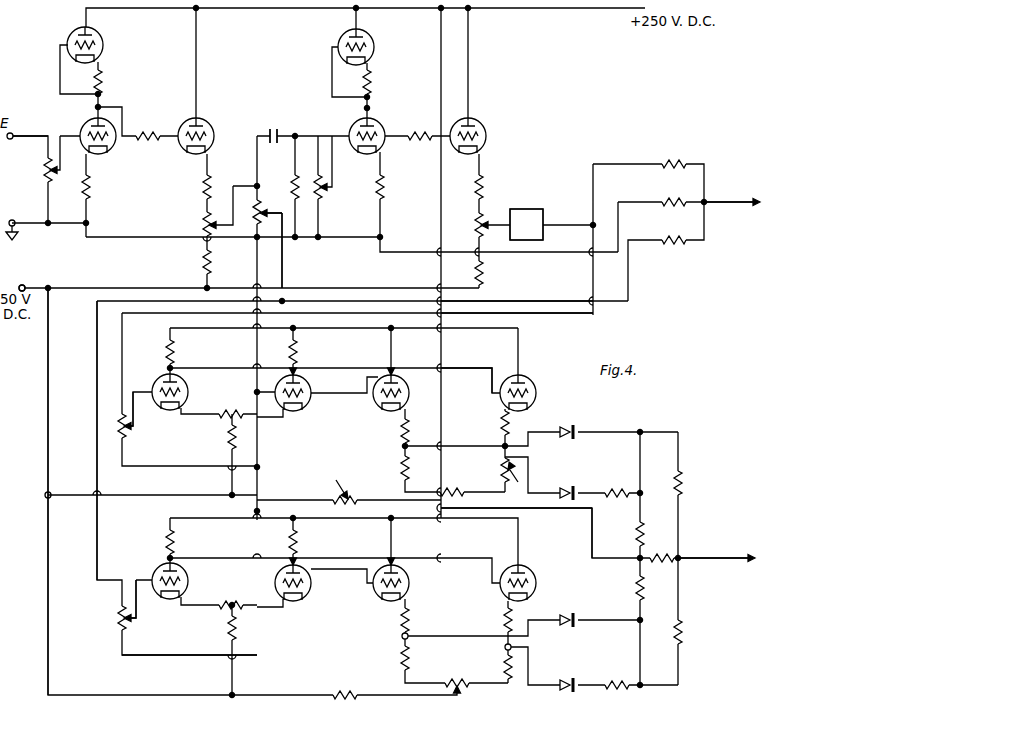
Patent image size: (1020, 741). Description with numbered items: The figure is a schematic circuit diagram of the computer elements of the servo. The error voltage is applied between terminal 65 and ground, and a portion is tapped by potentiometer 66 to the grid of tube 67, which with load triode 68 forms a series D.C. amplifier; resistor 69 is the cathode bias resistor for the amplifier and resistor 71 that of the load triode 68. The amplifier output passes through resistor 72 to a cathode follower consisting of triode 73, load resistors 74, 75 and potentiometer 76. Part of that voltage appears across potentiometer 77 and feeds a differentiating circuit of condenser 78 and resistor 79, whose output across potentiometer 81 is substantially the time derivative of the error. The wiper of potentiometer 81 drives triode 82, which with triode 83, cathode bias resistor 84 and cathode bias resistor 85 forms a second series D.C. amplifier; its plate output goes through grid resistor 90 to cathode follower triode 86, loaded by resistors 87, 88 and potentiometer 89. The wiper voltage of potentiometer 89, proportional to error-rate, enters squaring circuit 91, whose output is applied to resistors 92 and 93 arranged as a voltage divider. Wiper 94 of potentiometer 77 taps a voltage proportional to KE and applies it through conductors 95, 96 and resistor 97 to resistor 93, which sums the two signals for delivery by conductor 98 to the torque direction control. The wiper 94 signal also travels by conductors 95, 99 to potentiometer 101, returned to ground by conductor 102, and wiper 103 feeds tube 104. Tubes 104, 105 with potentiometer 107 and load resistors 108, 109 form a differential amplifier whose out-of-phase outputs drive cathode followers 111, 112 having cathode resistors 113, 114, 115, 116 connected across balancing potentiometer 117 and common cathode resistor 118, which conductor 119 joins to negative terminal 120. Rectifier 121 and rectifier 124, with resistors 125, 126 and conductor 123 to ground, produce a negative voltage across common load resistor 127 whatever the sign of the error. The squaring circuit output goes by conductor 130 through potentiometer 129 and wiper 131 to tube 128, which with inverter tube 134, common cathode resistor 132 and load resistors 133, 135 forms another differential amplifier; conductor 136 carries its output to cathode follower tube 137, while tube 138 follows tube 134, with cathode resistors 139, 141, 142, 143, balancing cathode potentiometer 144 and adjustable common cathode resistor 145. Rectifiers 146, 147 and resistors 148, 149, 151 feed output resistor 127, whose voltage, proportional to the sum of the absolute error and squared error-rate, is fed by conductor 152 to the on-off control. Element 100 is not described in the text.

The terminal 65 is at (18, 132).
The potentiometer 66 is at (46, 173).
The tube 67 is at (108, 152).
The load triode 68 is at (104, 47).
The cathode bias resistor 69 is at (91, 188).
The cathode bias resistor 71 is at (101, 77).
The resistor 72 is at (141, 130).
The triode 73 is at (208, 128).
The load resistor 74 is at (204, 187).
The load resistor 75 is at (204, 263).
The potentiometer 76 is at (204, 222).
The potentiometer 77 is at (262, 205).
The condenser 78 is at (277, 128).
The resistor 79 is at (296, 200).
The potentiometer 81 is at (330, 195).
The triode 82 is at (384, 153).
The triode 83 is at (376, 49).
The cathode bias resistor 84 is at (372, 79).
The cathode bias resistor 85 is at (384, 188).
The cathode follower triode 86 is at (484, 144).
The resistor 87 is at (476, 188).
The resistor 88 is at (476, 266).
The potentiometer 89 is at (476, 226).
The grid resistor 90 is at (413, 130).
The squaring circuit 91 is at (526, 206).
The resistor 92 is at (673, 160).
The resistor 93 is at (673, 198).
The wiper 94 is at (271, 225).
The conductor 95 is at (283, 280).
The conductor 96 is at (498, 301).
The resistor 97 is at (673, 246).
The conductor 98 is at (726, 200).
The conductor 99 is at (97, 372).
The resistor 100 is at (226, 632).
The potentiometer 101 is at (118, 618).
The conductor 102 is at (226, 655).
The wiper 103 is at (135, 620).
The tube 104 is at (190, 583).
The tube 105 is at (313, 597).
The potentiometer 107 is at (233, 598).
The load resistor 108 is at (173, 548).
The load resistor 109 is at (295, 555).
The tube 111 is at (530, 580).
The tube 112 is at (410, 587).
The cathode resistor 113 is at (408, 628).
The cathode resistor 114 is at (408, 662).
The cathode resistor 115 is at (504, 622).
The cathode resistor 116 is at (504, 665).
The balancing potentiometer 117 is at (460, 692).
The common cathode resistor 118 is at (340, 700).
The conductor 119 is at (46, 620).
The terminal 120 is at (24, 284).
The rectifier 121 is at (560, 615).
The conductor 123 is at (556, 512).
The rectifier 124 is at (563, 680).
The resistor 125 is at (617, 690).
The resistor 126 is at (682, 632).
The common load resistor 127 is at (661, 552).
The tube 128 is at (184, 390).
The potentiometer 129 is at (124, 440).
The conductor 130 is at (531, 318).
The wiper 131 is at (129, 428).
The common cathode resistor 132 is at (228, 438).
The load resistor 133 is at (176, 360).
The tube 134 is at (313, 398).
The load resistor 135 is at (298, 360).
The conductor 136 is at (454, 368).
The tube 137 is at (537, 386).
The tube 138 is at (404, 390).
The cathode resistor 139 is at (510, 430).
The cathode resistor 141 is at (518, 482).
The cathode resistor 142 is at (403, 428).
The cathode resistor 143 is at (400, 468).
The balancing cathode potentiometer 144 is at (452, 486).
The adjustable common cathode resistor 145 is at (336, 480).
The rectifier 146 is at (580, 430).
The rectifier 147 is at (567, 488).
The resistor 148 is at (612, 488).
The resistor 149 is at (636, 536).
The resistor 151 is at (680, 482).
The conductor 152 is at (694, 555).